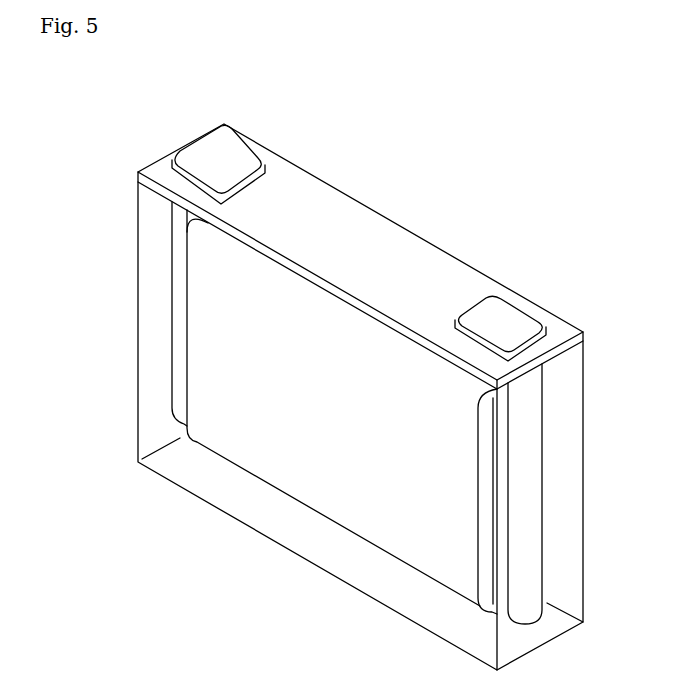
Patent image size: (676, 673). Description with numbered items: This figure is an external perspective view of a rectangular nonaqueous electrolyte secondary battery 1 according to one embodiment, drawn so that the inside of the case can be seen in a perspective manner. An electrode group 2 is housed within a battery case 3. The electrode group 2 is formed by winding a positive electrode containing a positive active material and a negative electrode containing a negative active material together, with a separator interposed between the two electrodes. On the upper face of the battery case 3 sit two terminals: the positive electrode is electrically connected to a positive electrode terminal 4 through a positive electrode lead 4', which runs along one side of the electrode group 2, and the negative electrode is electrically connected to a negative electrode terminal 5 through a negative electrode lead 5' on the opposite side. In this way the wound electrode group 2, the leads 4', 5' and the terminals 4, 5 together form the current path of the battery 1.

The nonaqueous electrolyte secondary battery 1 is at (478, 215).
The electrode group 2 is at (333, 408).
The battery case 3 is at (135, 272).
The positive electrode terminal 4 is at (218, 141).
The negative electrode terminal 5 is at (500, 301).
The positive electrode lead 4' is at (141, 314).
The negative electrode lead 5' is at (547, 494).